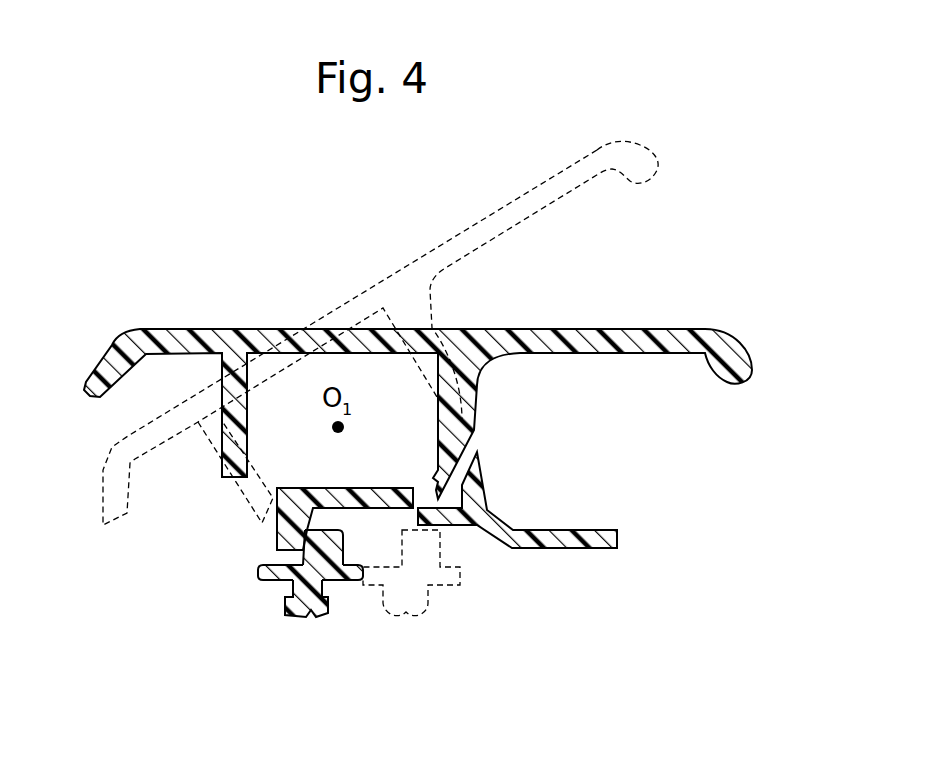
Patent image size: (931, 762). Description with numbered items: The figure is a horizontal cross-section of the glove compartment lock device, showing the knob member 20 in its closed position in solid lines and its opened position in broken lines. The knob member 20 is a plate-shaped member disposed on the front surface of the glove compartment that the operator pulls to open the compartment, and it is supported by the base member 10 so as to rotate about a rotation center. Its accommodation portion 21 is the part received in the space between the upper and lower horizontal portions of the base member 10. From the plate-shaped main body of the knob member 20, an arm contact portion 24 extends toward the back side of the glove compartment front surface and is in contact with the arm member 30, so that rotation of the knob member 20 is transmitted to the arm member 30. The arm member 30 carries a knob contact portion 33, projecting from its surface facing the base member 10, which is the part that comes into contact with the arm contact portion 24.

The base member 10 is at (618, 549).
The knob member 20 is at (707, 338).
The accommodation portion 21 is at (223, 477).
The arm contact portion 24 is at (290, 536).
The arm member 30 is at (327, 617).
The knob contact portion 33 is at (270, 582).